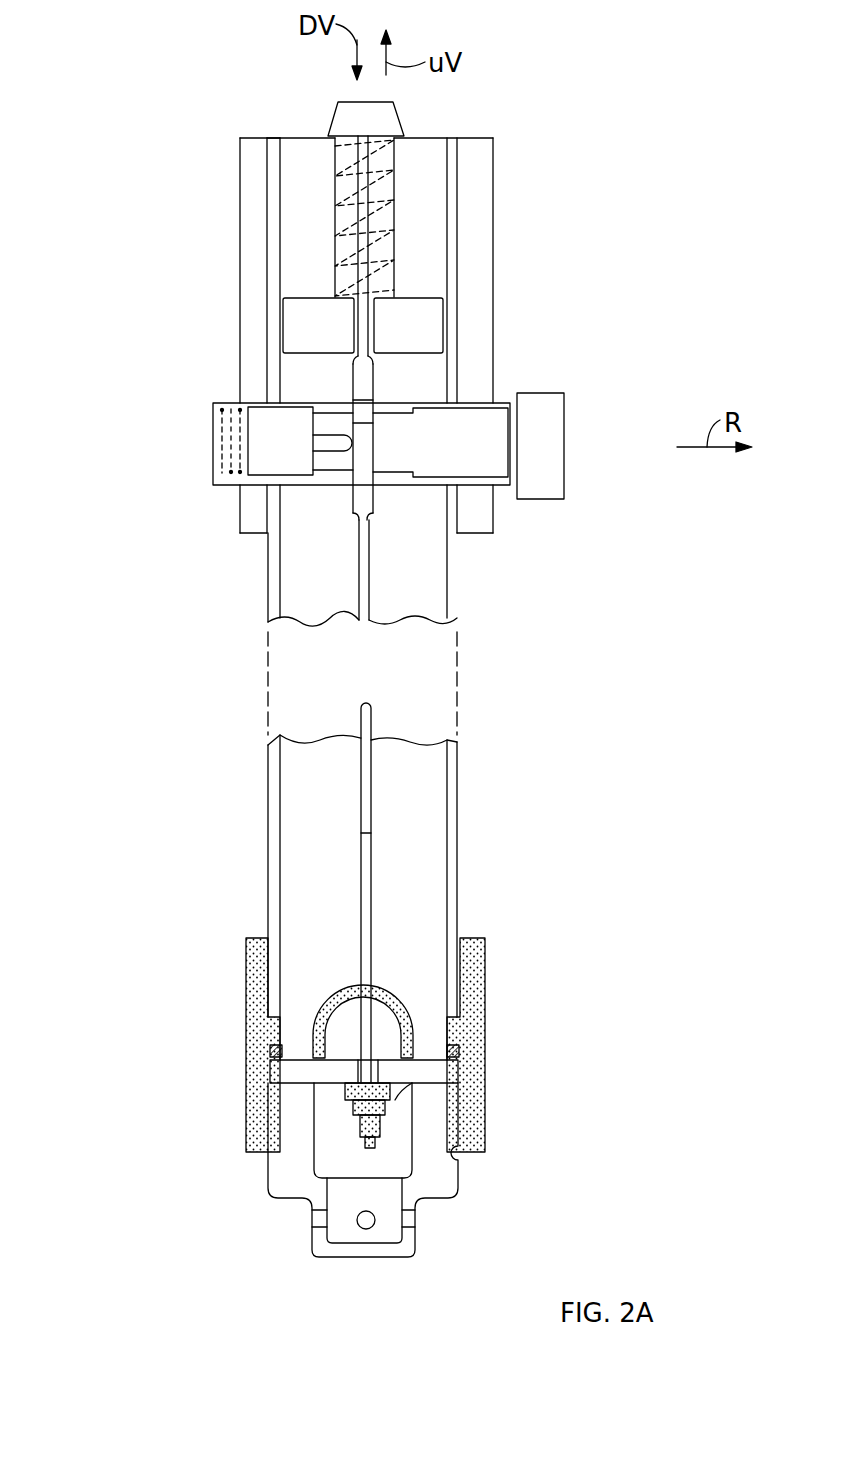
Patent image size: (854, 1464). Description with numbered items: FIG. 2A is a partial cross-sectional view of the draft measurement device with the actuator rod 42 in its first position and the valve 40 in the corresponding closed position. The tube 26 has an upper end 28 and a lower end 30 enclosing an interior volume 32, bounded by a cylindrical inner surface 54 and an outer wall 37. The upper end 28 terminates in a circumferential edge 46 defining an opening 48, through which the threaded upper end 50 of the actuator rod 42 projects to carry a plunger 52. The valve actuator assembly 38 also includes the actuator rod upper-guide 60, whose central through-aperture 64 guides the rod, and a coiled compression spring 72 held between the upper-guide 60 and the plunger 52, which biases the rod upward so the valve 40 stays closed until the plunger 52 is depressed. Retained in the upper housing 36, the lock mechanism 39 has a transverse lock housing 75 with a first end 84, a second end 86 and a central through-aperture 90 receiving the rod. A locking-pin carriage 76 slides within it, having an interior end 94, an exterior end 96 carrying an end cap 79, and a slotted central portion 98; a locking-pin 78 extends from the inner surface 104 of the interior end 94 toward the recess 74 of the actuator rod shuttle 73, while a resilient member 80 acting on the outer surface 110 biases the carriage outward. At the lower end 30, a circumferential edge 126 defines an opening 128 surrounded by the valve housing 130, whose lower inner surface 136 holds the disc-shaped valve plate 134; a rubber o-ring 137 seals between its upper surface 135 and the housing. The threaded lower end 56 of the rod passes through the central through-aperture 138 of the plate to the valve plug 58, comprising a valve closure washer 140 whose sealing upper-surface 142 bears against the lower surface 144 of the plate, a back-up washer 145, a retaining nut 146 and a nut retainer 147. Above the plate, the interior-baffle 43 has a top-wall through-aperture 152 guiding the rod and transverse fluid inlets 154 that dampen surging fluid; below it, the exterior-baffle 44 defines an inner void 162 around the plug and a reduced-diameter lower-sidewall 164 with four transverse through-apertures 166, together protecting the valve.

The tube 26 is at (268, 753).
The upper end of tube 28 is at (276, 256).
The lower end of tube 30 is at (268, 936).
The interior volume 32 is at (425, 603).
The upper housing 36 is at (255, 162).
The outer wall of tube 37 is at (462, 208).
The valve actuator assembly 38 is at (400, 550).
The lock mechanism 39 is at (185, 395).
The valve 40 is at (215, 1077).
The actuator rod 42 is at (372, 602).
The interior-baffle 43 is at (392, 993).
The exterior-baffle 44 is at (460, 1185).
The circumferential edge 46 is at (272, 136).
The opening 48 is at (306, 148).
The threaded upper end of actuator rod 50 is at (396, 173).
The plunger 52 is at (404, 113).
The inner surface of tube 54 is at (280, 202).
The threaded lower end of actuator rod 56 is at (366, 840).
The valve plug 58 is at (400, 1130).
The actuator rod upper-guide 60 is at (434, 322).
The central through-aperture of upper-guide 64 is at (376, 312).
The coiled compression spring 72 is at (396, 200).
The actuator rod shuttle 73 is at (352, 505).
The recess 74 is at (375, 408).
The lock housing 75 is at (312, 403).
The locking-pin carriage 76 is at (455, 450).
The locking-pin 78 is at (335, 455).
The end cap 79 is at (564, 421).
The resilient member 80 is at (222, 445).
The first end of lock housing 84 is at (218, 418).
The second end of lock housing 86 is at (535, 393).
The central through-aperture of lock housing 90 is at (350, 482).
The interior end of carriage 94 is at (270, 462).
The exterior end of carriage 96 is at (497, 450).
The slotted central portion 98 is at (395, 455).
The inner surface of interior end 104 is at (320, 423).
The outer surface of interior end 110 is at (220, 456).
The circumferential edge 126 is at (256, 1010).
The opening 128 is at (292, 1003).
The valve housing 130 is at (482, 950).
The valve plate 134 is at (443, 1070).
The upper surface of valve plate 135 is at (270, 1050).
The lower inner surface of valve housing 136 is at (470, 1152).
The rubber o-ring 137 is at (459, 1050).
The central through-aperture of valve plate 138 is at (300, 1060).
The valve closure washer 140 is at (345, 1094).
The sealing upper-surface 142 is at (412, 1093).
The lower surface of valve plate 144 is at (400, 1090).
The back-up washer 145 is at (353, 1107).
The retaining nut 146 is at (362, 1125).
The nut retainer 147 is at (368, 1143).
The central through-aperture of interior-baffle 152 is at (368, 986).
The fluid inlets 154 is at (312, 1046).
The inner void 162 is at (347, 1165).
The lower-sidewall 164 is at (420, 1245).
The transverse through-apertures 166 is at (410, 1224).